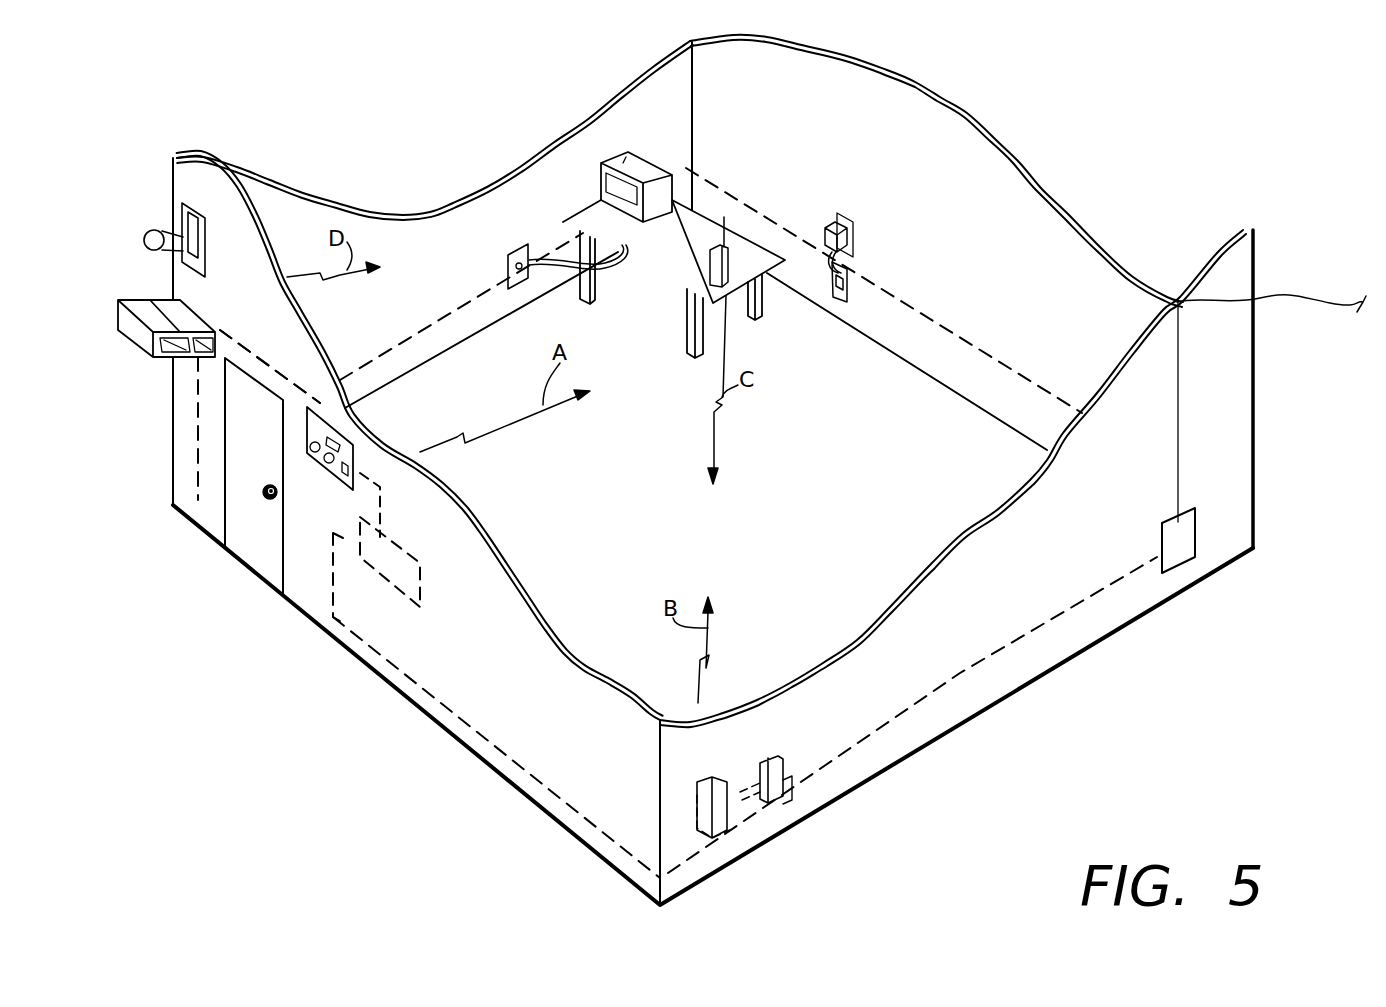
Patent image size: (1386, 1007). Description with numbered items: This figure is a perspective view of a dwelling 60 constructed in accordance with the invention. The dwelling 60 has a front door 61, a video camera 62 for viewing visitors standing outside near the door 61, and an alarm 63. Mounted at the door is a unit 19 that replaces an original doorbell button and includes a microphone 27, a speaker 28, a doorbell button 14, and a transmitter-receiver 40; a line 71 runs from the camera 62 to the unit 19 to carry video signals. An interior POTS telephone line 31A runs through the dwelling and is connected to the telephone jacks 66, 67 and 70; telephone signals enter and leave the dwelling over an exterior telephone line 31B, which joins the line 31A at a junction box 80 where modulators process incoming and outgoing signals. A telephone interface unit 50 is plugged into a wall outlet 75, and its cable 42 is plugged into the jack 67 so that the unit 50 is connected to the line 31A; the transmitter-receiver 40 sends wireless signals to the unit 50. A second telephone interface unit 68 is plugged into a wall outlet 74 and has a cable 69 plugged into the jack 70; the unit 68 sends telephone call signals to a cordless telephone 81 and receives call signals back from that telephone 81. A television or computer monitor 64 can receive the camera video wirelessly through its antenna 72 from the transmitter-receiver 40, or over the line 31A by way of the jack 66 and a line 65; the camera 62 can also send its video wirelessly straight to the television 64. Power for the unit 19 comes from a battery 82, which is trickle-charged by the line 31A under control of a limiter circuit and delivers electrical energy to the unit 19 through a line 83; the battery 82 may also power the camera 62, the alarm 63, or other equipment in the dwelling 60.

The dwelling 60 is at (1157, 640).
The front door 61 is at (243, 550).
The video camera 62 is at (137, 330).
The alarm 63 is at (163, 227).
The television or computer monitor 64 is at (647, 168).
The line 65 is at (618, 265).
The telephone jack 66 is at (518, 250).
The telephone wall jack 67 is at (848, 273).
The telephone interface unit 68 is at (700, 778).
The cable 69 is at (753, 773).
The telephone wall jack 70 is at (777, 803).
The line 71 is at (242, 353).
The antenna 72 is at (627, 163).
The 120 VAC wall outlet 74 is at (718, 837).
The 120 VAC wall outlet 75 is at (838, 213).
The junction box 80 is at (1162, 545).
The cordless telephone 81 is at (706, 265).
The battery 82 is at (420, 600).
The line 83 is at (393, 500).
The doorbell button 14 is at (332, 465).
The unit 19 is at (297, 462).
The microphone 27 is at (324, 440).
The speaker 28 is at (330, 470).
The transmitter-receiver 40 is at (348, 479).
The cable 42 is at (840, 273).
The telephone interface unit 50 is at (843, 240).
The interior POTS telephone line 31A is at (181, 487).
The exterior telephone line 31B is at (1287, 293).